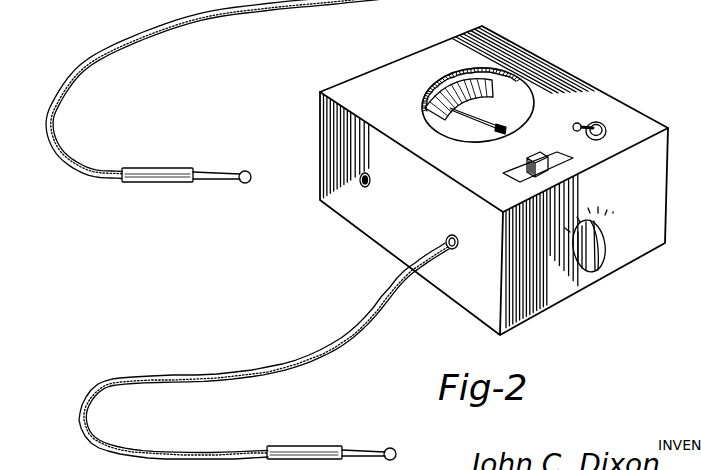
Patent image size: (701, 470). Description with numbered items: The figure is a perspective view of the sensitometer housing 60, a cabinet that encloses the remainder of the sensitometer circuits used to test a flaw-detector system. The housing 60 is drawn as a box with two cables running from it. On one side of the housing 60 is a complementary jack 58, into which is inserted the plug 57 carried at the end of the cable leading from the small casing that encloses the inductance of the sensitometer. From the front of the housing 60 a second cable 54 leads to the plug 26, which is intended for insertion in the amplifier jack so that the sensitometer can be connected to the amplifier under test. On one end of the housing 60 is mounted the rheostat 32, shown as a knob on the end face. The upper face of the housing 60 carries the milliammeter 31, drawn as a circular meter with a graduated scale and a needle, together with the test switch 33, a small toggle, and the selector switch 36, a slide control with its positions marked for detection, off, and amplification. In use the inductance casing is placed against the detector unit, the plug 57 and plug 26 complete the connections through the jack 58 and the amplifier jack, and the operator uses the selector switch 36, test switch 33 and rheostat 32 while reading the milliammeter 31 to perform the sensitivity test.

The plug 26 is at (300, 445).
The milliammeter 31 is at (517, 95).
The rheostat 32 is at (606, 233).
The test switch 33 is at (607, 126).
The selector switch 36 is at (536, 178).
The cable 54 is at (385, 287).
The plug 57 is at (163, 169).
The jack 58 is at (360, 190).
The sensitometer housing 60 is at (463, 285).